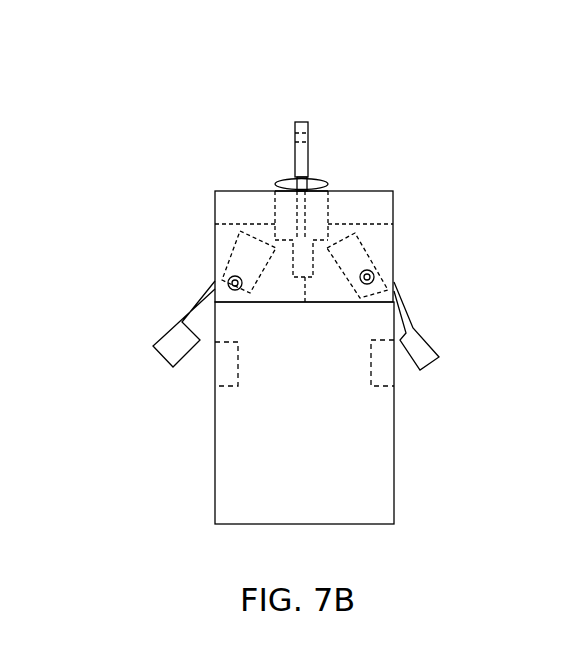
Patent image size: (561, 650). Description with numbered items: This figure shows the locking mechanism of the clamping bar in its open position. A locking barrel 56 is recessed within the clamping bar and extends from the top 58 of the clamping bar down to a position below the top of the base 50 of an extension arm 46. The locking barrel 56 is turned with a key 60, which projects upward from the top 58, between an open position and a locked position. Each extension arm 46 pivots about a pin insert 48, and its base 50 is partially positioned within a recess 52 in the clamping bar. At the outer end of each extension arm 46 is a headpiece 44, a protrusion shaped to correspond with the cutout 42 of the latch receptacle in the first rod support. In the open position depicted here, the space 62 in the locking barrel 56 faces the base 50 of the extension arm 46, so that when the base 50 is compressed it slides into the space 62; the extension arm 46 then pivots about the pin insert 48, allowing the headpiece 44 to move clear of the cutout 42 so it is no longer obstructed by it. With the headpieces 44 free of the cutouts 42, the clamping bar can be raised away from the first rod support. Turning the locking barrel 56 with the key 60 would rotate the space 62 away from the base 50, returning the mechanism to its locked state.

The cutout 42 is at (385, 373).
The headpiece 44 is at (173, 343).
The extension arm 46 is at (404, 306).
The pin insert 48 is at (363, 277).
The base 50 is at (252, 257).
The recess 52 is at (225, 250).
The locking barrel 56 is at (317, 213).
The top 58 is at (252, 190).
The key 60 is at (303, 155).
The space 62 is at (282, 267).